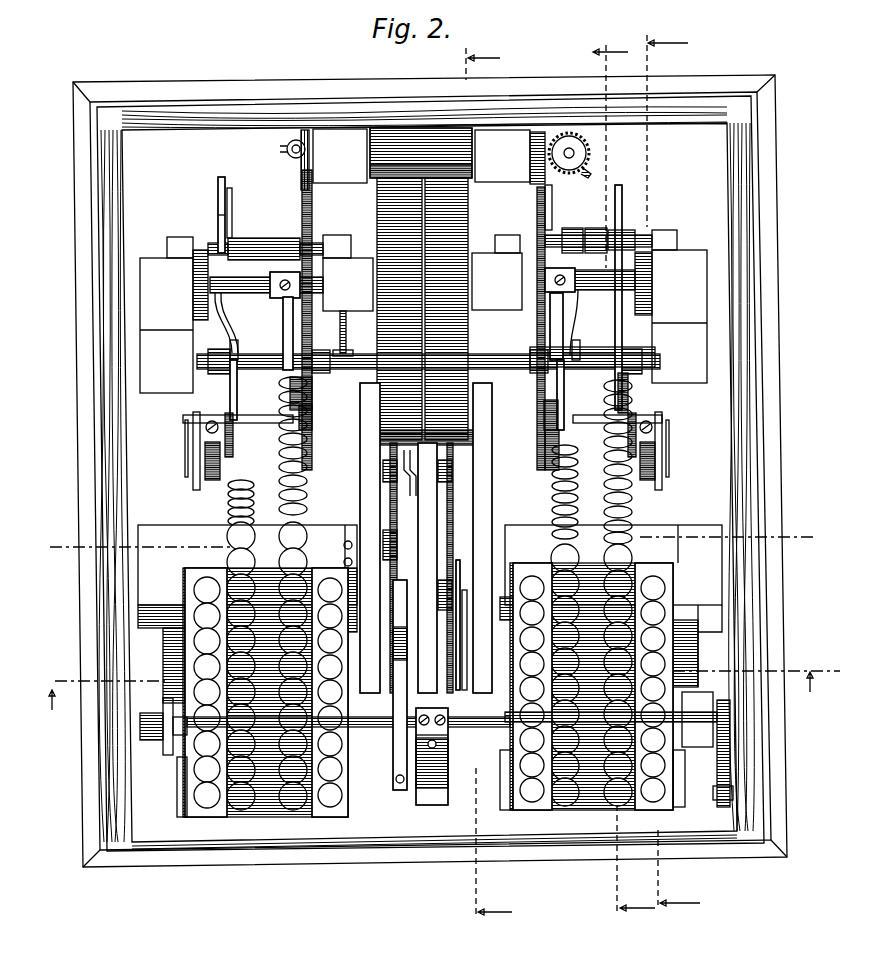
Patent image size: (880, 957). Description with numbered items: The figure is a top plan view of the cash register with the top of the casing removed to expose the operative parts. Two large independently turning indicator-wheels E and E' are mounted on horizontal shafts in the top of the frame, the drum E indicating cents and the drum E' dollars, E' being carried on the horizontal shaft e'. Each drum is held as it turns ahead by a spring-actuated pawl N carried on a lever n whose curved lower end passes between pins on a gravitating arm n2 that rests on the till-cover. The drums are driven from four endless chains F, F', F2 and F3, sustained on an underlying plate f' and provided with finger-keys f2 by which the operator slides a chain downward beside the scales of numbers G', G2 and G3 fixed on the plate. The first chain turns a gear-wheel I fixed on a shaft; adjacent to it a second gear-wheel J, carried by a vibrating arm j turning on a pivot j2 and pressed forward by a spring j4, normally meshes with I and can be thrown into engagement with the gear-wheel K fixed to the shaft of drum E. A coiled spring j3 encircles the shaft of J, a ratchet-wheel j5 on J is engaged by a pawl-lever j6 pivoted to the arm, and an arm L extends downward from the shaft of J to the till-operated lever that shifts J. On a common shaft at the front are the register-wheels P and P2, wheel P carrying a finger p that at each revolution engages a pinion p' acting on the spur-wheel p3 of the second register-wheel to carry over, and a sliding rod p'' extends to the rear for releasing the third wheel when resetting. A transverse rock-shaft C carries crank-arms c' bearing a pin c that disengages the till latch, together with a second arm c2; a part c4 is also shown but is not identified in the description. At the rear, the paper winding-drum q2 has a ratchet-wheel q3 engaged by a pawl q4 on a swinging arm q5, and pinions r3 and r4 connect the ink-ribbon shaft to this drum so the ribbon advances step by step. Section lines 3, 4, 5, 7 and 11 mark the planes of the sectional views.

The ratchet-wheel q3 is at (290, 142).
The swinging arm q5 is at (309, 150).
The pawl q4 is at (309, 186).
The upper winding-drum q2 is at (421, 153).
The pinion r4 is at (530, 141).
The pinion r3 is at (575, 152).
The indicator-wheel E' is at (399, 309).
The indicator-wheel E is at (446, 309).
The gravitating arm n2 is at (218, 190).
The lever n is at (232, 213).
The pawl-lever j6 is at (218, 215).
The gear-wheel K is at (312, 226).
The spring-actuated pawl N is at (545, 192).
The horizontal shaft e' is at (405, 321).
The pivot j2 is at (243, 350).
The spring j4 is at (283, 326).
The sliding rod p'' is at (349, 333).
The vibrating arm j is at (230, 400).
The gear-wheel J is at (312, 392).
The coiled spring j3 is at (312, 414).
The ratchet-wheel j5 is at (628, 405).
The arm L is at (193, 478).
The register-wheel P2 is at (356, 538).
The register-wheel P is at (489, 538).
The spur-wheel p3 is at (443, 568).
The gear-wheel I is at (545, 517).
The pinion p' is at (458, 625).
The finger p is at (459, 650).
The finger-keys f2 is at (279, 460).
The underlying plate f' is at (412, 627).
The endless chain F3 is at (247, 614).
The endless chain F2 is at (330, 535).
The endless chain F' is at (611, 666).
The endless chain F is at (663, 543).
The scale of numbers G3 is at (207, 818).
The scale of numbers G2 is at (330, 818).
The scale of numbers G' is at (599, 702).
The transverse rock-shaft C is at (348, 735).
The lever c4 is at (416, 710).
The second arm c2 is at (448, 768).
The crank-arms c' is at (617, 749).
The pin c is at (715, 792).
The section line 3 is at (671, 474).
The section line 4 is at (624, 483).
The section line 5 is at (486, 487).
The section line 7 is at (439, 682).
The section line 11 is at (430, 542).